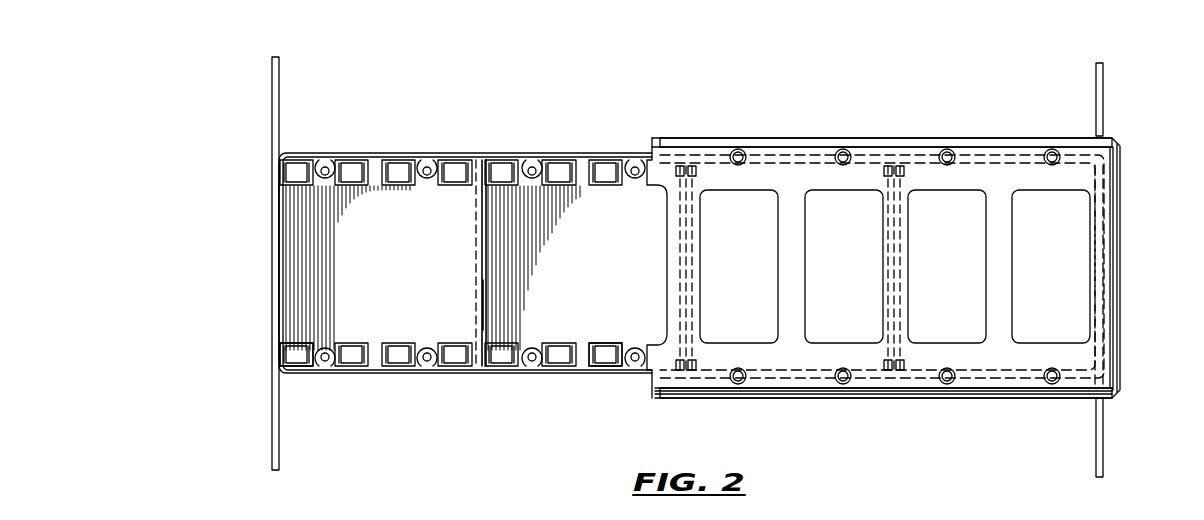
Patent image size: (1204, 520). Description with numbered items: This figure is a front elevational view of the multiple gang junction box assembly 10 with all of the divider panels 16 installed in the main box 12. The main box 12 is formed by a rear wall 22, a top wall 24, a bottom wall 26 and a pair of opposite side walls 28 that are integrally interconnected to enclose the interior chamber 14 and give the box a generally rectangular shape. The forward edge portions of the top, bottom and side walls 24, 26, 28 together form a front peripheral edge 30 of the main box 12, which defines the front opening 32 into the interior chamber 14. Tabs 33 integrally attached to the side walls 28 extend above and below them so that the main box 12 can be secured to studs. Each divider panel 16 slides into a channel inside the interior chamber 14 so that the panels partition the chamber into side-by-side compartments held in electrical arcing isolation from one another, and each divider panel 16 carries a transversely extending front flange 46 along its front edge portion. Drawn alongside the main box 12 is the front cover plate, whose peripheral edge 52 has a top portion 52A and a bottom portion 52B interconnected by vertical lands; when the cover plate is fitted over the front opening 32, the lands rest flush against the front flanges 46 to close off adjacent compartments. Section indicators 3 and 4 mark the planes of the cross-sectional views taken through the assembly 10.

The multiple gang junction box assembly 10 is at (937, 98).
The main box 12 is at (278, 317).
The interior chamber 14 is at (641, 300).
The divider panel 16 is at (480, 250).
The rear wall 22 is at (588, 258).
The top wall 24 is at (497, 157).
The bottom wall 26 is at (520, 375).
The side wall 28 is at (275, 210).
The front peripheral edge 30 is at (378, 374).
The front opening 32 is at (355, 228).
The tab 33 is at (272, 118).
The front flange 46 is at (478, 306).
The peripheral edge 52 is at (1112, 367).
The top portion of the peripheral edge 52A is at (902, 140).
The bottom portion of the peripheral edge 52B is at (967, 395).
The section line 3- 3 is at (211, 210).
The section line 4- 4 is at (510, 103).